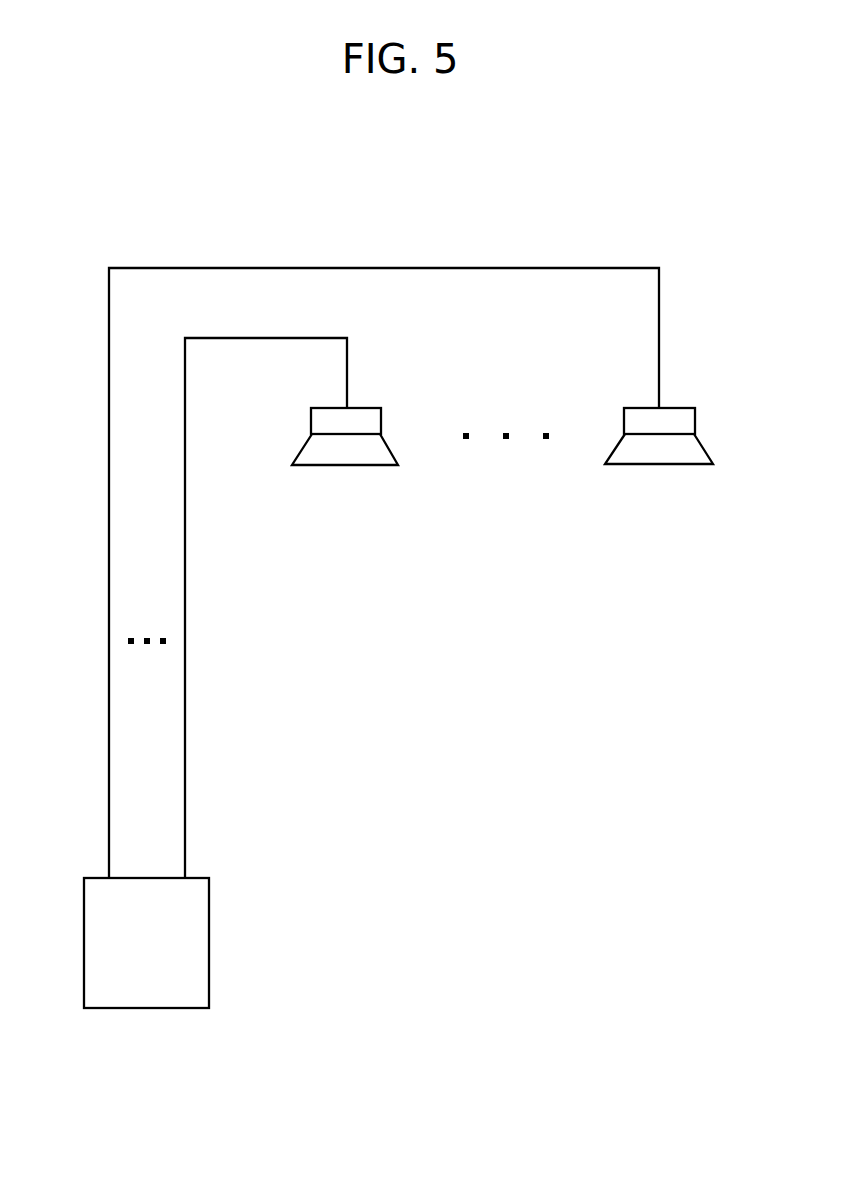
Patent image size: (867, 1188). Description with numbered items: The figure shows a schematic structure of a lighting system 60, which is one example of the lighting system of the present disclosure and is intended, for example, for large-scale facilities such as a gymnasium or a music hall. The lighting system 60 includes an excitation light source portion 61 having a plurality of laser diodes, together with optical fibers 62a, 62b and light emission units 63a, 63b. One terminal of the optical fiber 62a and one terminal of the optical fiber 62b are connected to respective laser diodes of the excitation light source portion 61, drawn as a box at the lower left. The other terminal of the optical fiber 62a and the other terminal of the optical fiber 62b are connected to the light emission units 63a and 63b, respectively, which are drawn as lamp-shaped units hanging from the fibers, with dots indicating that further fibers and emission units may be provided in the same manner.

The lighting system 60 is at (503, 227).
The excitation light source portion 61 is at (182, 939).
The optical fiber 62a is at (227, 268).
The optical fiber 62b is at (185, 782).
The light emission unit 63a is at (658, 450).
The light emission unit 63b is at (344, 452).